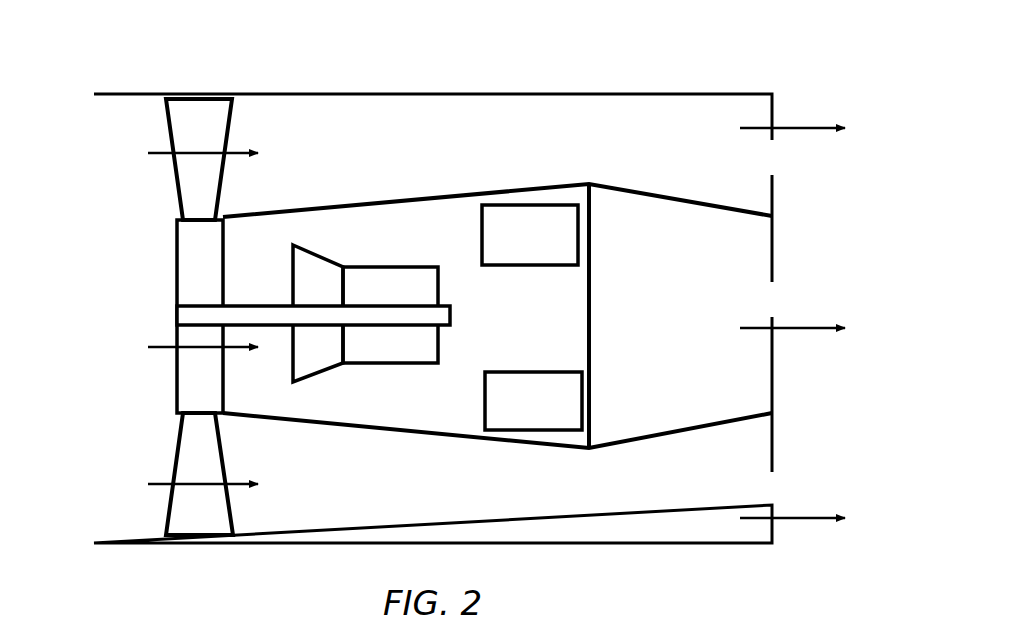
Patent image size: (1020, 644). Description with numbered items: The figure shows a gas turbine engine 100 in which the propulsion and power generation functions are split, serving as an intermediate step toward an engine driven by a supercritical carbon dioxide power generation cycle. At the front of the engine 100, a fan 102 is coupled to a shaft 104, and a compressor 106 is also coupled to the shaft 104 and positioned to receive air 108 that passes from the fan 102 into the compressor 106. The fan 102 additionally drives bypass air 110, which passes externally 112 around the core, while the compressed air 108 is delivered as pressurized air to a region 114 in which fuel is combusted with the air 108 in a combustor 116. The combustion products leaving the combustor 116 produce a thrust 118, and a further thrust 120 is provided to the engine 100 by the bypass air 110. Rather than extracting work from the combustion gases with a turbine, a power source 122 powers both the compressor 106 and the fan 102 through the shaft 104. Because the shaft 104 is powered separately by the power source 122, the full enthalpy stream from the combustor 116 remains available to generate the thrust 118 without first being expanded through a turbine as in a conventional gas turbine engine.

The engine 100 is at (734, 60).
The fan 102 is at (166, 130).
The shaft 104 is at (250, 303).
The compressor 106 is at (322, 253).
The air 108 is at (160, 350).
The bypass air 110 is at (153, 156).
The external bypass path 112 is at (411, 503).
The combustion region 114 is at (416, 245).
The combustor 116 is at (552, 372).
The thrust 118 is at (813, 322).
The thrust 120 is at (805, 125).
The power source 122 is at (388, 365).